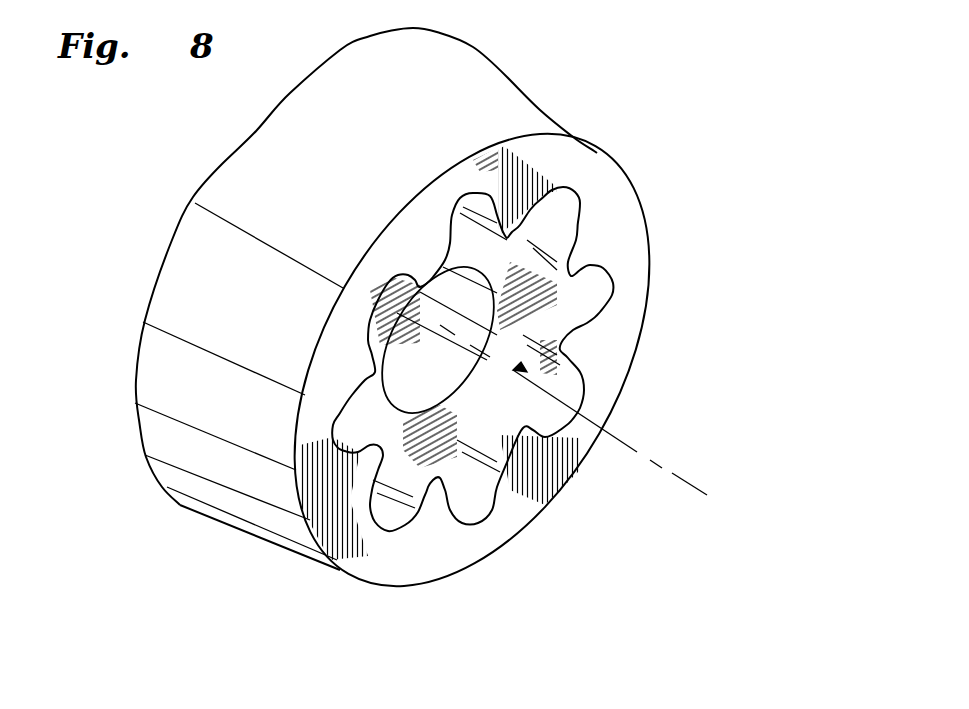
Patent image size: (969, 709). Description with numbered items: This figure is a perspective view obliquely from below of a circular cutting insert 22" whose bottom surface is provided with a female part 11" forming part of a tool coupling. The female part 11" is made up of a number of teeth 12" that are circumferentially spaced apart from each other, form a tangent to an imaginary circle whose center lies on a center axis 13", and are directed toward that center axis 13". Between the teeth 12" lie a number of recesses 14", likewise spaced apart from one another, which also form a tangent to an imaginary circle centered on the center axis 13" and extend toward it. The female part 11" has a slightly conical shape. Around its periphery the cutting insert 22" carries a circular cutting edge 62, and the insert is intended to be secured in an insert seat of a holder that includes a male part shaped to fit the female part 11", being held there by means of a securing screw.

The circular cutting insert 22 is at (500, 48).
The teeth 12 is at (575, 262).
The recesses 14 is at (647, 298).
The female part 11 is at (545, 407).
The center axis 13 is at (690, 479).
The circular cutting edge 62 is at (128, 408).